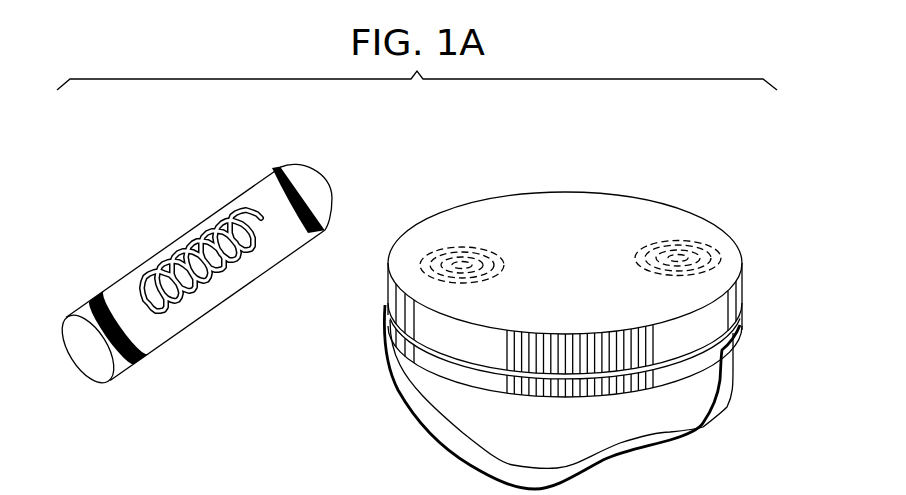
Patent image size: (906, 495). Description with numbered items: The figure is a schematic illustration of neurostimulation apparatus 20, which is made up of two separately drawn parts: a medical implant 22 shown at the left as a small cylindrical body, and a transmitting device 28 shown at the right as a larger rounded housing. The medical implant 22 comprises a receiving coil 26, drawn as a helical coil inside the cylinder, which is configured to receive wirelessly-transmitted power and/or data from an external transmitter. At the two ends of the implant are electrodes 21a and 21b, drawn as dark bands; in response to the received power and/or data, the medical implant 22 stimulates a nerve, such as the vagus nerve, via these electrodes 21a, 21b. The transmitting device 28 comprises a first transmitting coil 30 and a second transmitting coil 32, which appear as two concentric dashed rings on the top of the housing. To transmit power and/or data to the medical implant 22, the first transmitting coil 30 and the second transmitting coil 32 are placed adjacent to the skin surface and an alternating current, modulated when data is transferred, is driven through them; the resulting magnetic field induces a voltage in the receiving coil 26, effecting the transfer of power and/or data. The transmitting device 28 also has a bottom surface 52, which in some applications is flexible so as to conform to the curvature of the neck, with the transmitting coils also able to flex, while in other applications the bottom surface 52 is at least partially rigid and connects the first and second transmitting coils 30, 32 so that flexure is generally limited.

The neurostimulation apparatus 20 is at (207, 49).
The electrode 21a is at (89, 303).
The electrode 21b is at (272, 171).
The medical implant 22 is at (209, 215).
The receiving coil 26 is at (168, 264).
The transmitting device 28 is at (735, 300).
The first transmitting coil 30 is at (432, 256).
The second transmitting coil 32 is at (693, 255).
The bottom surface 52 is at (583, 193).